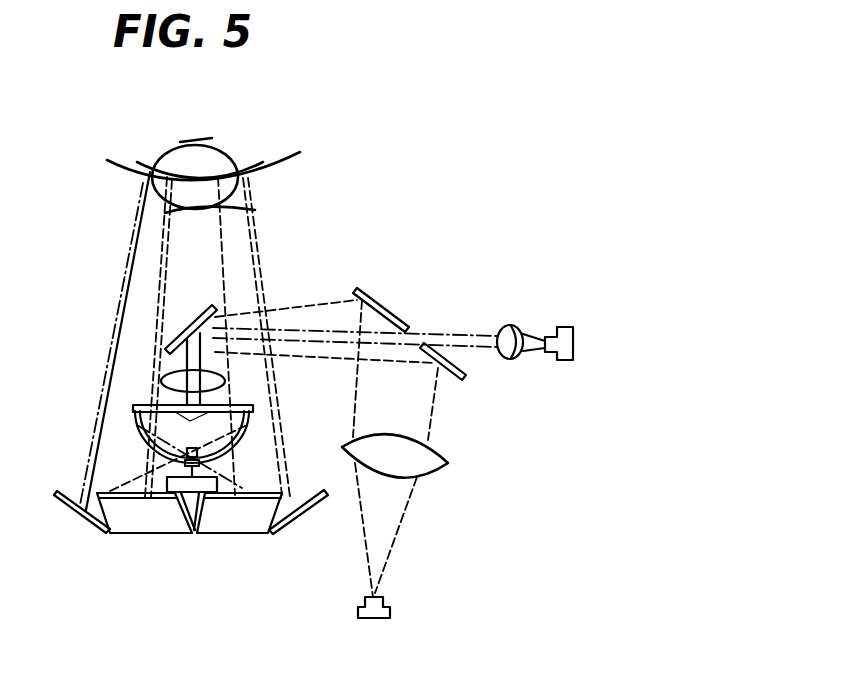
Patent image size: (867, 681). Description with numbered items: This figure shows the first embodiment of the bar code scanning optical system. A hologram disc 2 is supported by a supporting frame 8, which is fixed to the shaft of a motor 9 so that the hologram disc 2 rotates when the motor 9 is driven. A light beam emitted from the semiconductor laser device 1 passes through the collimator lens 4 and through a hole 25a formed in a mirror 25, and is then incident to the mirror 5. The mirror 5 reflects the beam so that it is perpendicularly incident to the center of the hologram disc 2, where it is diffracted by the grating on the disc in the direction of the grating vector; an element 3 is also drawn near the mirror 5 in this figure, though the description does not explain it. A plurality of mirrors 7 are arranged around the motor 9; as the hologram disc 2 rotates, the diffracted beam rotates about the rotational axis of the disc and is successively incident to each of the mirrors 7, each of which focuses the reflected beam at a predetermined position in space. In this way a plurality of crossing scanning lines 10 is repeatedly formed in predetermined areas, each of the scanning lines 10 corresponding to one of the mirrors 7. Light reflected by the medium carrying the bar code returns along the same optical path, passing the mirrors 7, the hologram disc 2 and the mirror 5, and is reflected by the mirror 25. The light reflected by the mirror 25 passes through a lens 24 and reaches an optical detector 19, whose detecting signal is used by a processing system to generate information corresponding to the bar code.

The semiconductor laser device 1 is at (575, 342).
The hologram disc 2 is at (255, 408).
The mirror 3 is at (240, 306).
The collimator lens 4 is at (509, 326).
The mirror 5 is at (185, 334).
The mirrors 7 is at (87, 527).
The supporting frame 8 is at (140, 432).
The motor 9 is at (197, 500).
The scanning lines 10 is at (170, 146).
The optical detector 19 is at (374, 620).
The lens 24 is at (446, 454).
The mirror 25 is at (382, 302).
The hole 25a is at (400, 327).